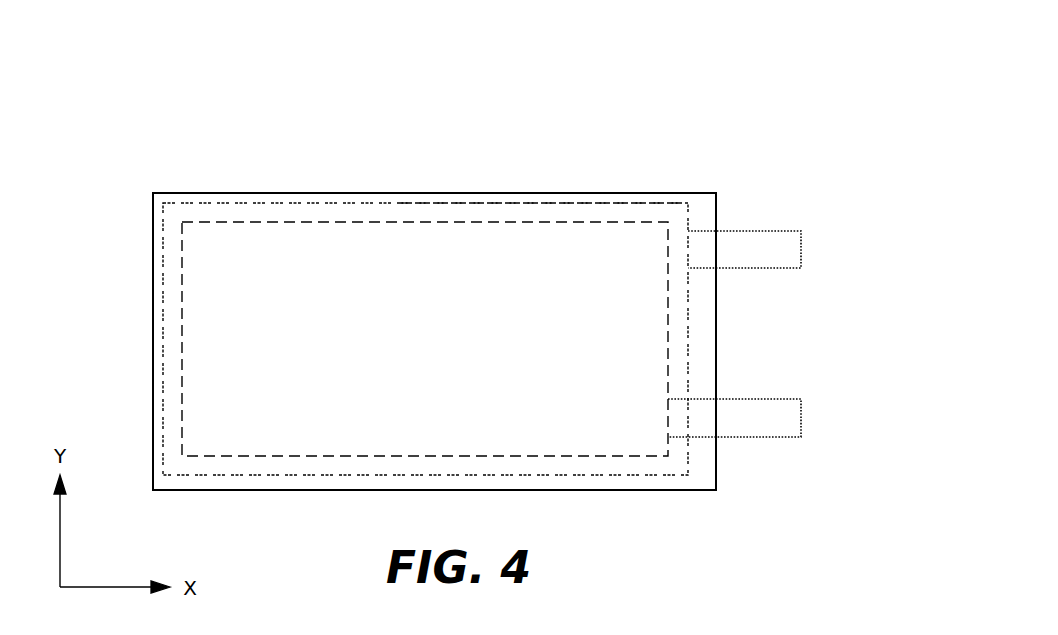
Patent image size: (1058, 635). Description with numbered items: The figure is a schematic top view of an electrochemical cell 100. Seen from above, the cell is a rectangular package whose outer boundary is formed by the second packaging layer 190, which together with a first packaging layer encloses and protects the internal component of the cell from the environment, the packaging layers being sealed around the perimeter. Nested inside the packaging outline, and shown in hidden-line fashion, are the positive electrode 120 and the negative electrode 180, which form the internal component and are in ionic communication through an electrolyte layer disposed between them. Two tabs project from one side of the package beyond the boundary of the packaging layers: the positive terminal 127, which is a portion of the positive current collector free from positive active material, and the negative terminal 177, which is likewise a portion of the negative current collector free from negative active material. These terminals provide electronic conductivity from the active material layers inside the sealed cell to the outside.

The electrochemical cell 100 is at (708, 129).
The positive electrode 120 is at (193, 202).
The negative electrode 180 is at (318, 221).
The second packaging layer 190 is at (467, 203).
The positive terminal 127 is at (764, 248).
The negative terminal 177 is at (777, 418).